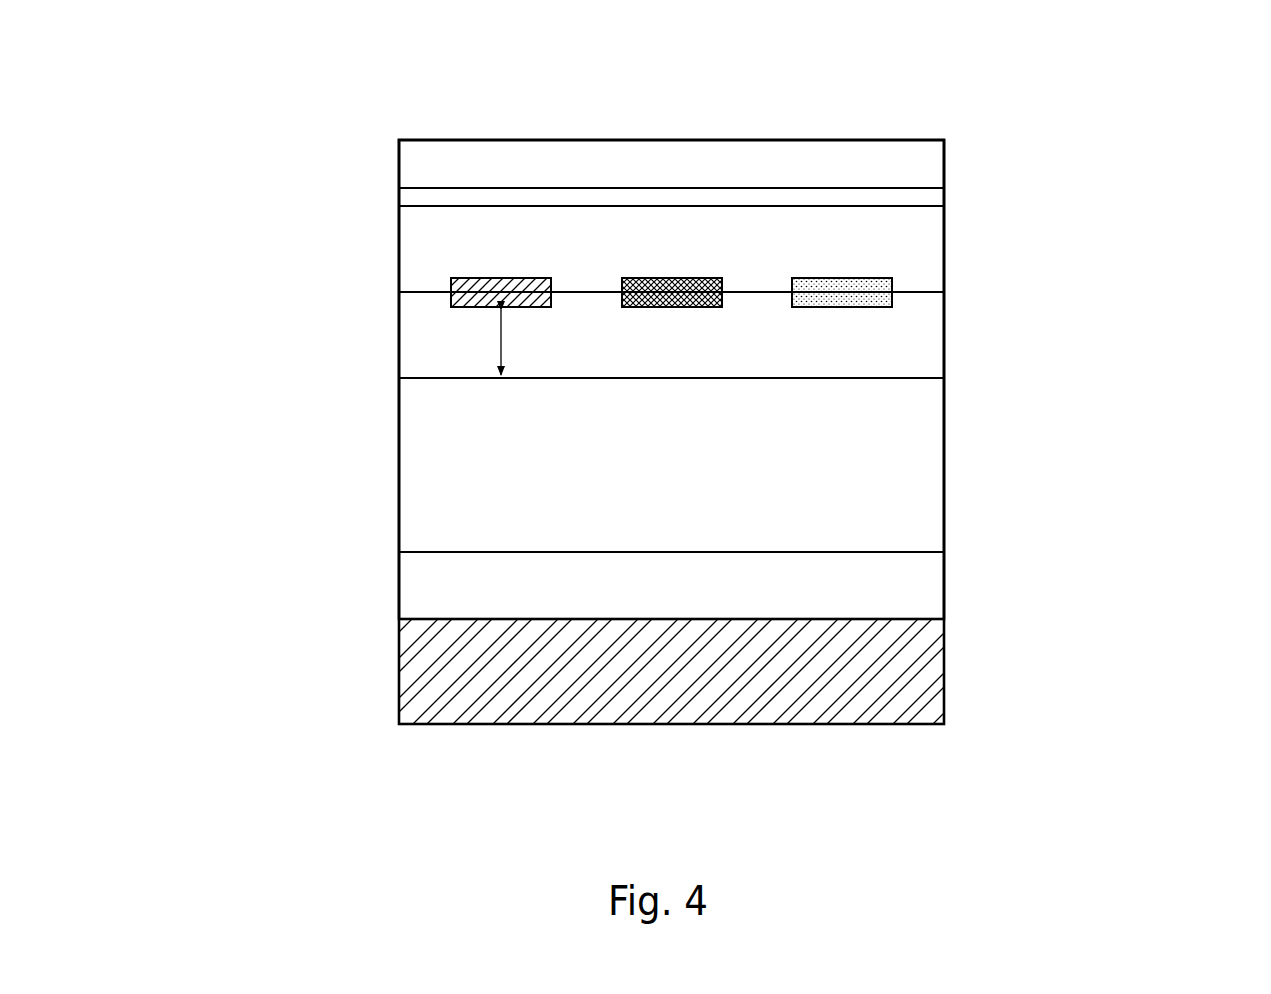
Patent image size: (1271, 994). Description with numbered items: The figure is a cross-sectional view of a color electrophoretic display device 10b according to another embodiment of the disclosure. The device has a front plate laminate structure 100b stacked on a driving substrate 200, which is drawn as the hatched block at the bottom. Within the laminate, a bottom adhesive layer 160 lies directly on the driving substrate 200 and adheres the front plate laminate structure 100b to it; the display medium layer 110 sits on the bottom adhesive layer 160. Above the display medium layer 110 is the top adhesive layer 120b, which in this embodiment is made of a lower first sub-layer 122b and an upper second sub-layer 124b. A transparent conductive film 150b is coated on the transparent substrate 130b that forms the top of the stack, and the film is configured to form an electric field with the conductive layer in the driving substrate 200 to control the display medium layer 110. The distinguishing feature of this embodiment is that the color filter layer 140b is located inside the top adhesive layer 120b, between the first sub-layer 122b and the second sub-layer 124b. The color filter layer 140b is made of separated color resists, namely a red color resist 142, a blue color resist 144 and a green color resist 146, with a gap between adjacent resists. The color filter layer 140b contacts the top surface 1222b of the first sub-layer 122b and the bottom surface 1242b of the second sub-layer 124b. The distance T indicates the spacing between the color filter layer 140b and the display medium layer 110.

The color electrophoretic display device 10b is at (232, 59).
The front plate laminate structure 100b is at (1168, 145).
The transparent substrate 130b is at (941, 162).
The transparent conductive film 150b is at (941, 197).
The top adhesive layer 120b is at (1073, 217).
The second sub-layer 124b is at (941, 238).
The first sub-layer 122b is at (941, 325).
The bottom surface 1242b is at (425, 281).
The top surface 1222b is at (413, 303).
The display medium layer 110 is at (941, 465).
The bottom adhesive layer 160 is at (941, 585).
The driving substrate 200 is at (941, 672).
The color filter layer 140b is at (697, 166).
The red color resist 142 is at (500, 287).
The blue color resist 144 is at (673, 287).
The green color resist 146 is at (812, 193).
The distance T is at (515, 342).